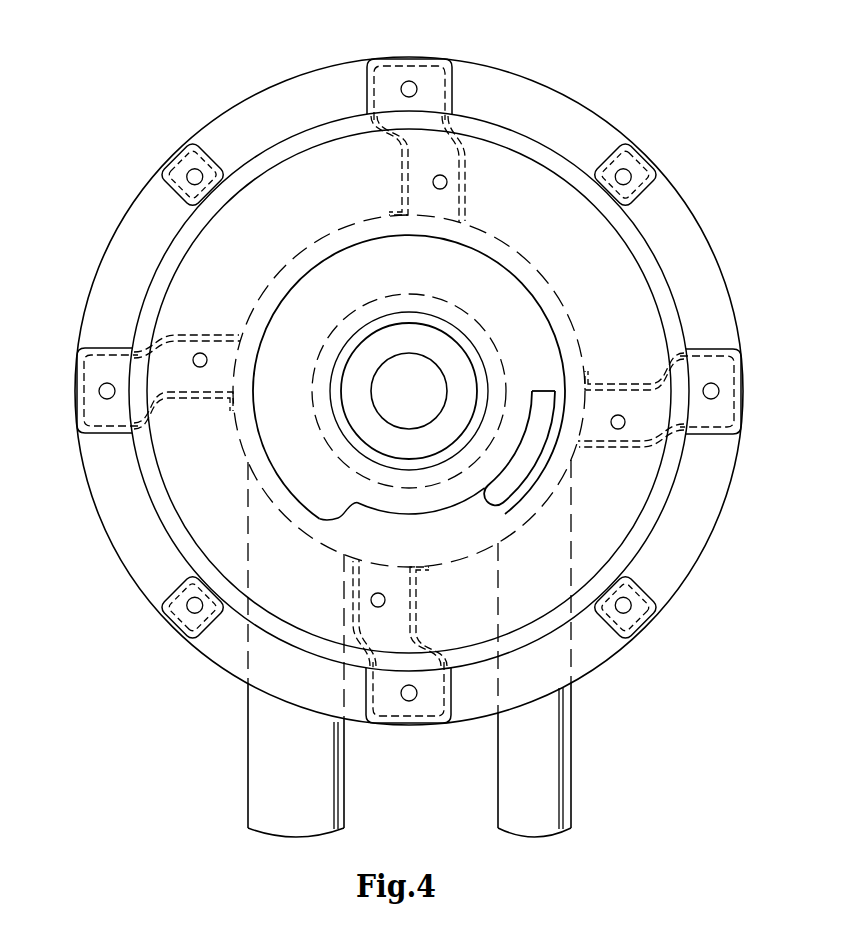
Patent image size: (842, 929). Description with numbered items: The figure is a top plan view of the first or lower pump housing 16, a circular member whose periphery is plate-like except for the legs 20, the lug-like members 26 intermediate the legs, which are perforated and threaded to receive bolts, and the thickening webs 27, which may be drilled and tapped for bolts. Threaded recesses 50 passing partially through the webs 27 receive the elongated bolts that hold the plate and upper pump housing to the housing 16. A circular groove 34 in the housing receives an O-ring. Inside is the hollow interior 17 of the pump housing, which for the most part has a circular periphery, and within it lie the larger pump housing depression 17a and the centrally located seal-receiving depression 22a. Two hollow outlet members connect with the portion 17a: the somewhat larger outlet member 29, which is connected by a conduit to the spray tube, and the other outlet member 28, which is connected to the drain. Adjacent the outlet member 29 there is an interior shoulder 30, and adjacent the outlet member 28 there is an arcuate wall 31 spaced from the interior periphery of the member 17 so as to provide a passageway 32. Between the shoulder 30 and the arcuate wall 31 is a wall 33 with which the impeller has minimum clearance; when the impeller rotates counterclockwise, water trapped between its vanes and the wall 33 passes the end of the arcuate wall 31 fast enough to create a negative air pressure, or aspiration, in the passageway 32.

The housing 16 is at (682, 216).
The hollow interior 17 is at (512, 290).
The pump housing depression 17a is at (313, 256).
The legs 20 is at (430, 76).
The seal-receiving depression 22a is at (356, 363).
The lug-like members 26 is at (178, 163).
The thickening webs 27 is at (422, 192).
The outlet member 28 is at (558, 781).
The outlet member 29 is at (258, 777).
The interior shoulder 30 is at (337, 512).
The arcuate wall 31 is at (542, 403).
The passageway 32 is at (543, 454).
The wall 33 is at (398, 533).
The circular groove 34 is at (152, 503).
The threaded recesses 50 is at (449, 182).